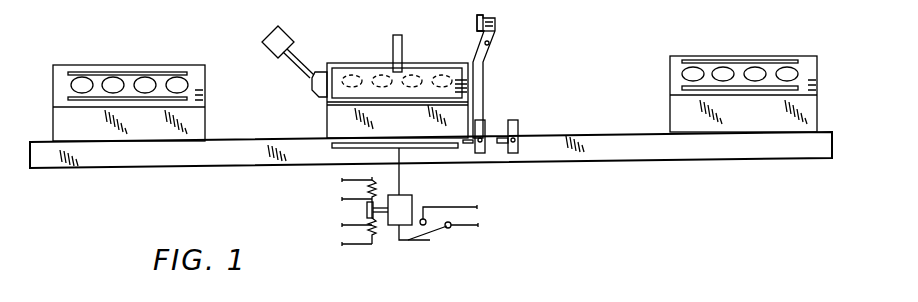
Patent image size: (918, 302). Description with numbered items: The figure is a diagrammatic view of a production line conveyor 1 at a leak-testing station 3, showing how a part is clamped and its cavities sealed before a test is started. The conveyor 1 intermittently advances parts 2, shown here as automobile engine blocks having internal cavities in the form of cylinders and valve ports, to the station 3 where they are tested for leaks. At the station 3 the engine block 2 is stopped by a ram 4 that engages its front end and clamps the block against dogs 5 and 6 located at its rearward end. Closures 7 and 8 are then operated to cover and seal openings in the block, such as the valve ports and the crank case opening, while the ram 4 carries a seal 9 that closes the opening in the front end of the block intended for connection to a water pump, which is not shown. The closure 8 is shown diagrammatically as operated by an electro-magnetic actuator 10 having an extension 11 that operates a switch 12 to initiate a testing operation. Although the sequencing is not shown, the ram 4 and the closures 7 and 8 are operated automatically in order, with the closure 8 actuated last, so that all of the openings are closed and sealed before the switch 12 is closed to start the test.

The conveyor 1 is at (612, 160).
The parts 2 is at (118, 65).
The station 3 is at (494, 98).
The ram 4 is at (301, 53).
The dog 5 is at (497, 42).
The dog 6 is at (486, 123).
The closure 7 is at (432, 69).
The closure 8 is at (445, 150).
The seal 9 is at (316, 93).
The electro-magnetic actuator 10 is at (386, 248).
The extension 11 is at (408, 241).
The switch 12 is at (437, 232).